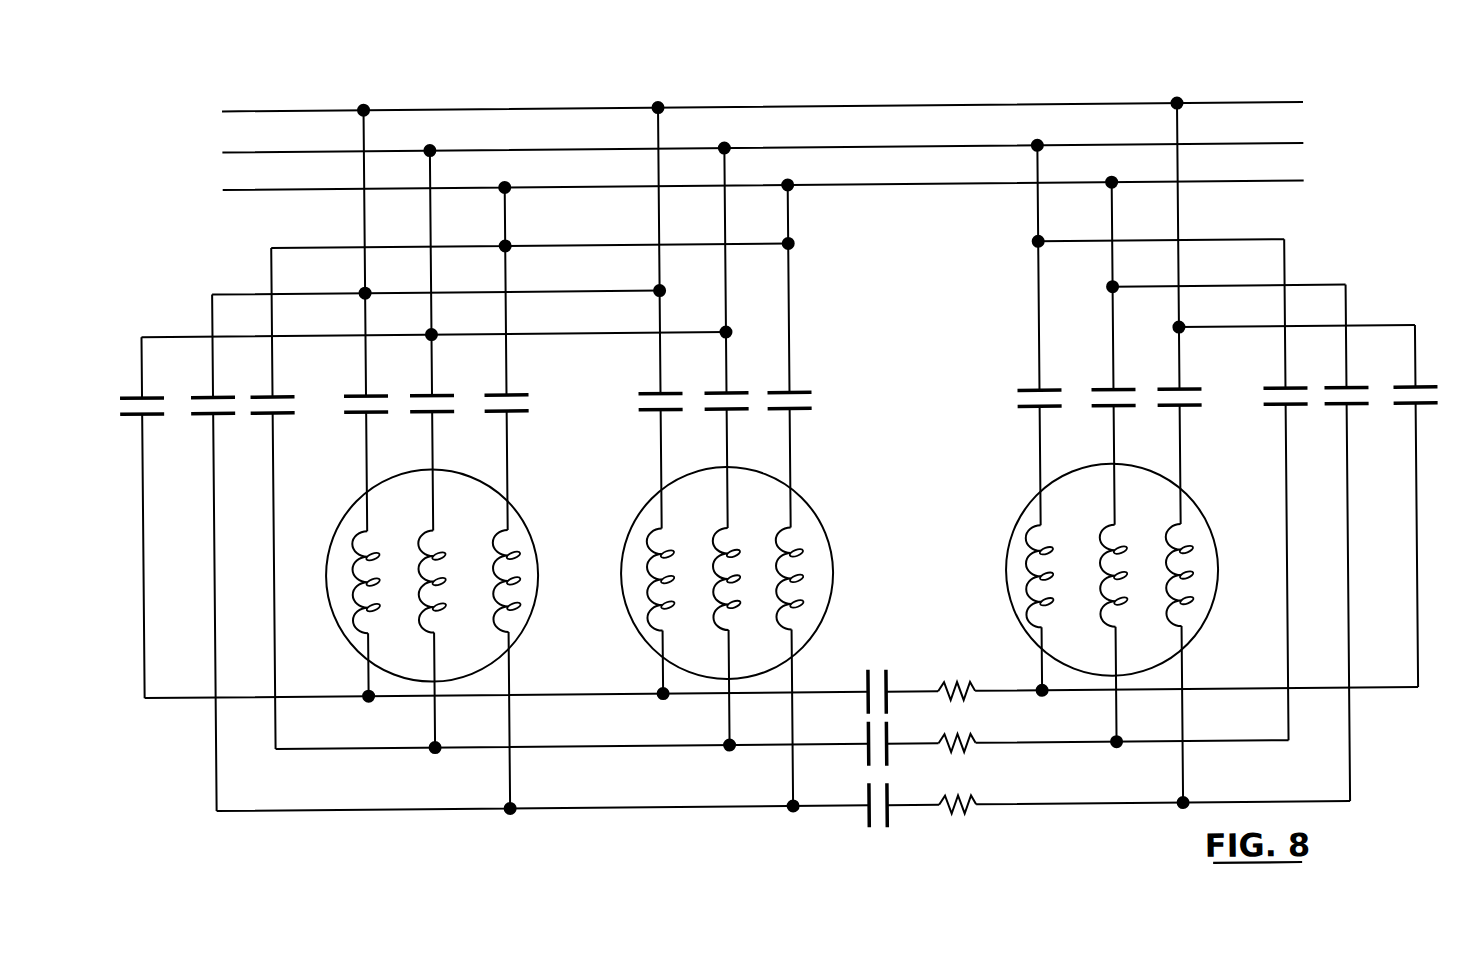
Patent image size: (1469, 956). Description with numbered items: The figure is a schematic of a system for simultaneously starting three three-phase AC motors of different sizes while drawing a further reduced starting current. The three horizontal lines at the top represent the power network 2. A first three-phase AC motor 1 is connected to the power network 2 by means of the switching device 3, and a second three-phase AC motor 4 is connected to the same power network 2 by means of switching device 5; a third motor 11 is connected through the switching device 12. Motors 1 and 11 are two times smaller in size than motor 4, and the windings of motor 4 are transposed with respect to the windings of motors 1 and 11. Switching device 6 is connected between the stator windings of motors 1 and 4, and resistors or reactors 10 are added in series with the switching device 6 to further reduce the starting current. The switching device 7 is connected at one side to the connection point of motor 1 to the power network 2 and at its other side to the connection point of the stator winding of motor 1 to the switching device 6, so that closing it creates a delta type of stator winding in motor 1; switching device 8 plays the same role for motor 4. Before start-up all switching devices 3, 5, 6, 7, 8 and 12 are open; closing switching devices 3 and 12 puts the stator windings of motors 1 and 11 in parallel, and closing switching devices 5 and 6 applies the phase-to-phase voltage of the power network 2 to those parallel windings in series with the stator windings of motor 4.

The power network 2 is at (763, 131).
The switching device 7 is at (220, 530).
The switching device 3 is at (444, 388).
The first three-phase AC motor 1 is at (437, 576).
The switching device 12 is at (744, 384).
The third three-phase AC motor 11 is at (736, 573).
The switching device 5 is at (1117, 380).
The switching device 8 is at (1361, 520).
The second three-phase AC motor 4 is at (1120, 570).
The switching device 6 is at (864, 738).
The resistors or reactors 10 is at (947, 731).